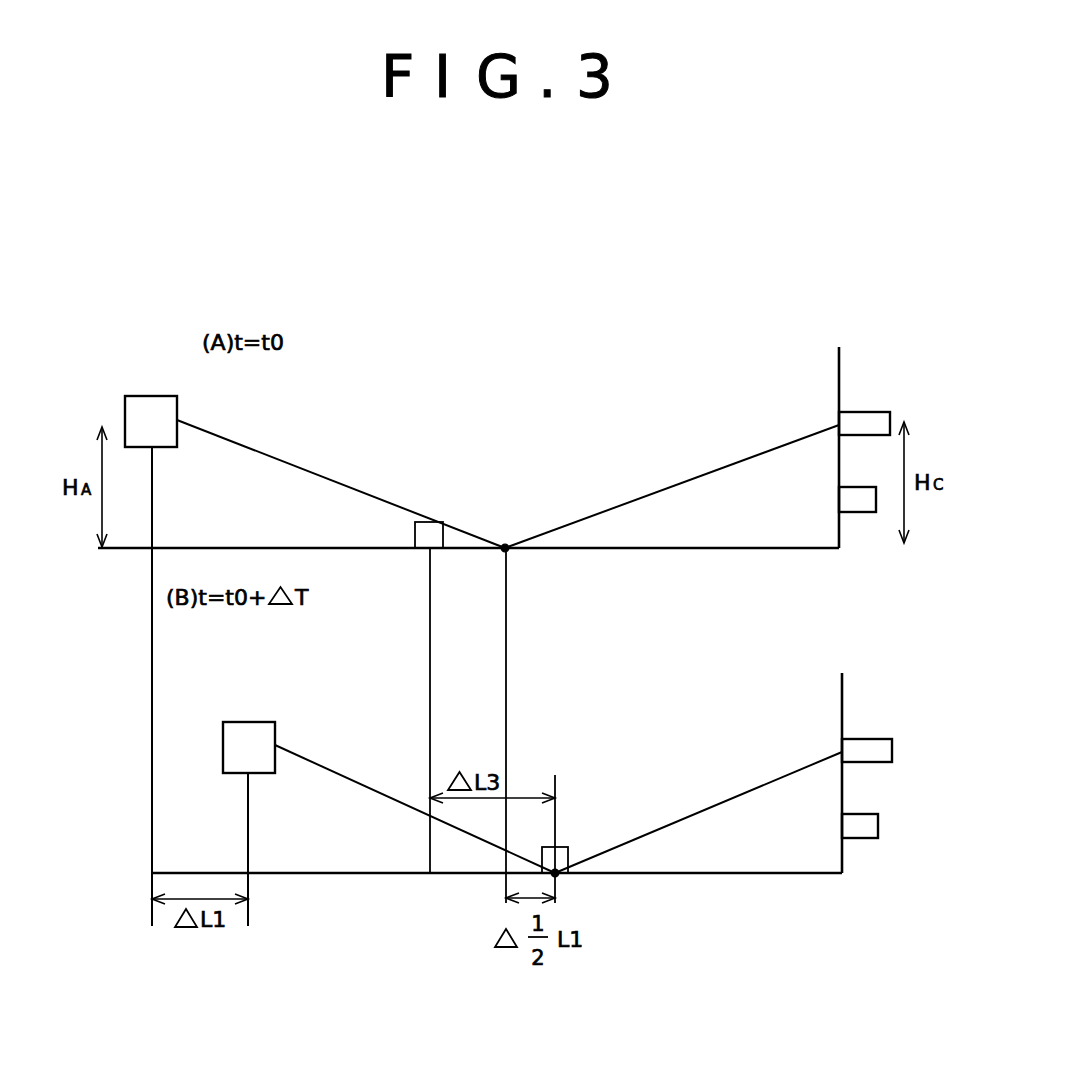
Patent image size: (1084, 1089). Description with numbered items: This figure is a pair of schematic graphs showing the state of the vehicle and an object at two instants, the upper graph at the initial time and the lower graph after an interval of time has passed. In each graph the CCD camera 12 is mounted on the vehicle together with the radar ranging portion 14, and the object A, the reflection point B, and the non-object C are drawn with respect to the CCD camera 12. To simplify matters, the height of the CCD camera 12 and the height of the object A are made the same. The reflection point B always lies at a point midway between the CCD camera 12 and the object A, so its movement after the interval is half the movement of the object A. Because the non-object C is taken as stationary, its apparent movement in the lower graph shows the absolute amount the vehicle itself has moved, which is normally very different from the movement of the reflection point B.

The CCD camera 12 is at (863, 420).
The radar ranging portion 14 is at (860, 504).
The object A is at (200, 584).
The reflection point B is at (585, 897).
The non-object C is at (491, 697).